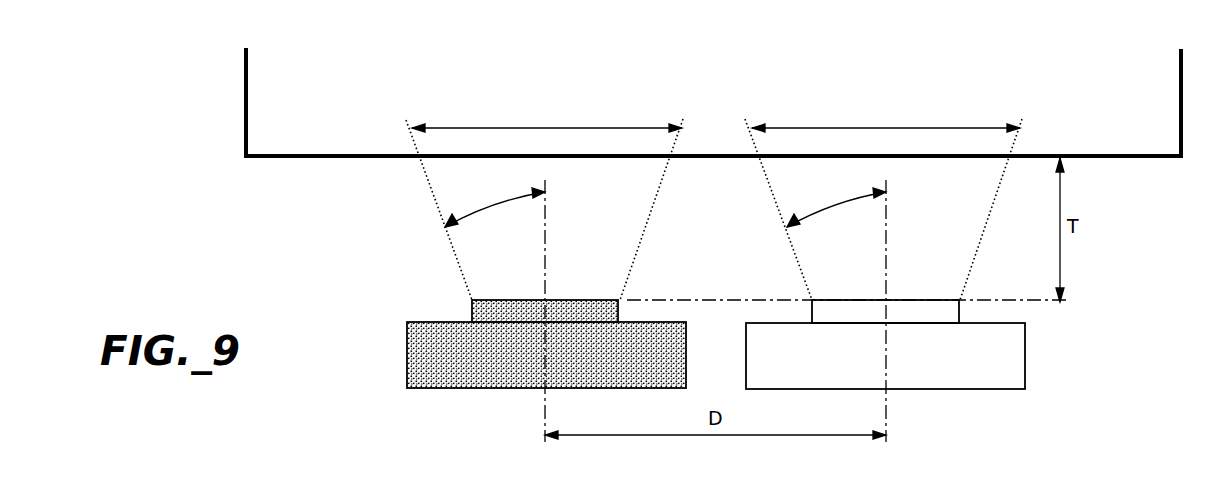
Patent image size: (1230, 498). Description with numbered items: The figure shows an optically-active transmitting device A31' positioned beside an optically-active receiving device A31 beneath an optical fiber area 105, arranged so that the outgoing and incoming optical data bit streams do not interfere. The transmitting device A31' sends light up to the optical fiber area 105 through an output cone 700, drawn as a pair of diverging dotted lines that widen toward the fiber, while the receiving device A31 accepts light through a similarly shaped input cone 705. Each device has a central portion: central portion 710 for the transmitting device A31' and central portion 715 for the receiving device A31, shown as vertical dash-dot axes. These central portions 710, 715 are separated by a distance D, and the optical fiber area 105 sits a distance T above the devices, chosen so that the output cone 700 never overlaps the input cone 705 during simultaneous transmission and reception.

The optical fiber area 105 is at (1117, 142).
The output cone 700 is at (442, 182).
The input cone 705 is at (776, 190).
The central portion 710 is at (544, 398).
The central portion 715 is at (887, 403).
The transmitting device A31' is at (501, 344).
The receiving device A31 is at (929, 344).